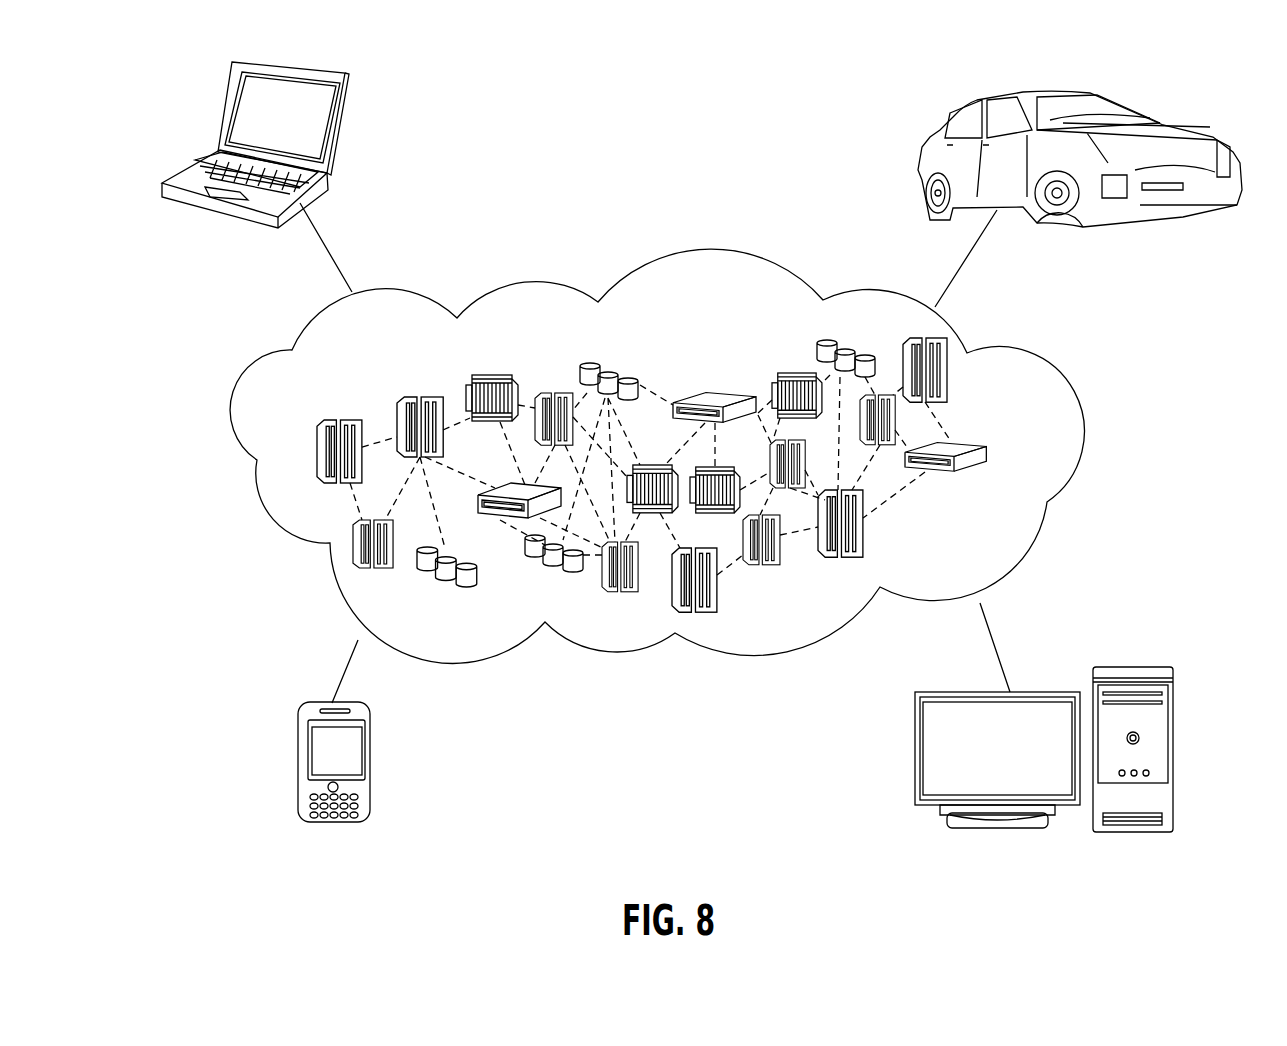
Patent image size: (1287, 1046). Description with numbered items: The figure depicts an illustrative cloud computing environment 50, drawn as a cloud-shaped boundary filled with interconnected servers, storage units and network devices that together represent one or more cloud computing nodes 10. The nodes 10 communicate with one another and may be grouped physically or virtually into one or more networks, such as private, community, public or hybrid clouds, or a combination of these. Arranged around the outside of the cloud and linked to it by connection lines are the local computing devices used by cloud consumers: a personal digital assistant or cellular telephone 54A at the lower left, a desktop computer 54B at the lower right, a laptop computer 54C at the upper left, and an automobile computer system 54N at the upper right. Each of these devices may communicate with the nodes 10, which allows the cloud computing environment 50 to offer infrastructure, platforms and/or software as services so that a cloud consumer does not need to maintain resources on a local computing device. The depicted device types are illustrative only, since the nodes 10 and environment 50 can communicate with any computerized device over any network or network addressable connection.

The cloud computing node 10 is at (1027, 453).
The cloud computing environment 50 is at (1055, 365).
The personal digital assistant or cellular telephone 54A is at (298, 768).
The desktop computer 54B is at (1137, 668).
The laptop computer 54C is at (337, 130).
The automobile computer system 54N is at (925, 138).